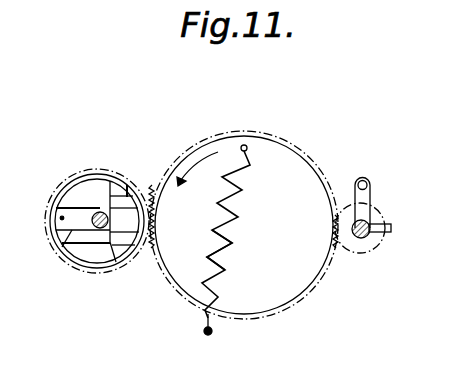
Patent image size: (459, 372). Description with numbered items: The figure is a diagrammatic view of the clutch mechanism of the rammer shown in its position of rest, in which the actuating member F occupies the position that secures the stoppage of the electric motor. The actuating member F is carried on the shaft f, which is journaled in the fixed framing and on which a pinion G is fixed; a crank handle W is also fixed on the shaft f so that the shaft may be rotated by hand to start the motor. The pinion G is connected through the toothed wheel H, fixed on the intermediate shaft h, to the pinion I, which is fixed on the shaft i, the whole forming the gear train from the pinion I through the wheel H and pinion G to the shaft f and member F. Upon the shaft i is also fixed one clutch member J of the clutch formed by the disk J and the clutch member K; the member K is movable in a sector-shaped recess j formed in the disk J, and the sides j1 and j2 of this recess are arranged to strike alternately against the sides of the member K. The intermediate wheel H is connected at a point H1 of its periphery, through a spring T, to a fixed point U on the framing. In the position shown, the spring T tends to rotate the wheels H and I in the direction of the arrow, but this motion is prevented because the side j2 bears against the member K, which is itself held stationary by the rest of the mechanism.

The toothed wheel H is at (283, 307).
The point of the periphery of wheel H H1 is at (247, 145).
The intermediate shaft h is at (240, 227).
The spring T is at (232, 263).
The fixed point U is at (204, 332).
The clutch member J is at (79, 188).
The pinion I is at (141, 195).
The clutch member K is at (62, 218).
The sector shaped recess j is at (86, 185).
The side of the recess j1 is at (117, 187).
The side of the recess j2 is at (62, 252).
The shaft i is at (113, 245).
The pinion G is at (354, 256).
The crank handle W is at (364, 196).
The shaft f is at (366, 236).
The actuating member F is at (391, 229).